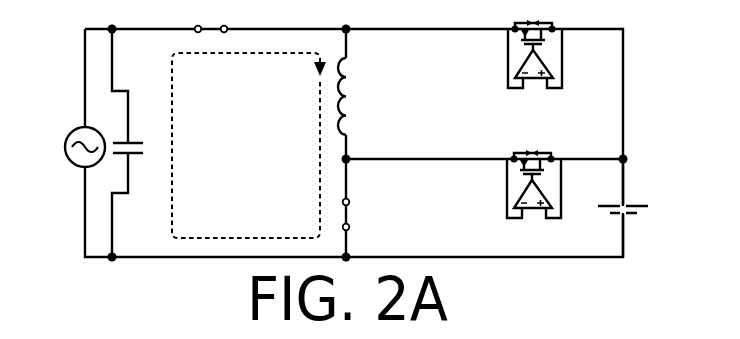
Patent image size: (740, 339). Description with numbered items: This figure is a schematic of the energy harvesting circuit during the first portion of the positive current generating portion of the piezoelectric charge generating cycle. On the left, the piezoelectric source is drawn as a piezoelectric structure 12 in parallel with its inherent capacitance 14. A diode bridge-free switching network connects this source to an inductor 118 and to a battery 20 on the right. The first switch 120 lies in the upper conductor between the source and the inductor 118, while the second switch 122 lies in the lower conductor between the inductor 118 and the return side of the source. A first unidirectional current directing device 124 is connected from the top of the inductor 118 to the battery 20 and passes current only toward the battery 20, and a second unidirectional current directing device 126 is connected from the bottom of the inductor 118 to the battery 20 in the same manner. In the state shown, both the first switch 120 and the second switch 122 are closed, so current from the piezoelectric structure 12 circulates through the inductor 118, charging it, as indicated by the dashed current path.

The piezoelectric structure 12 is at (77, 127).
The inherent capacitance 14 is at (134, 130).
The battery 20 is at (628, 207).
The inductor 118 is at (347, 89).
The first switch 120 is at (211, 28).
The second switch 122 is at (366, 211).
The first unidirectional current directing device 124 is at (506, 57).
The second unidirectional current directing device 126 is at (505, 190).